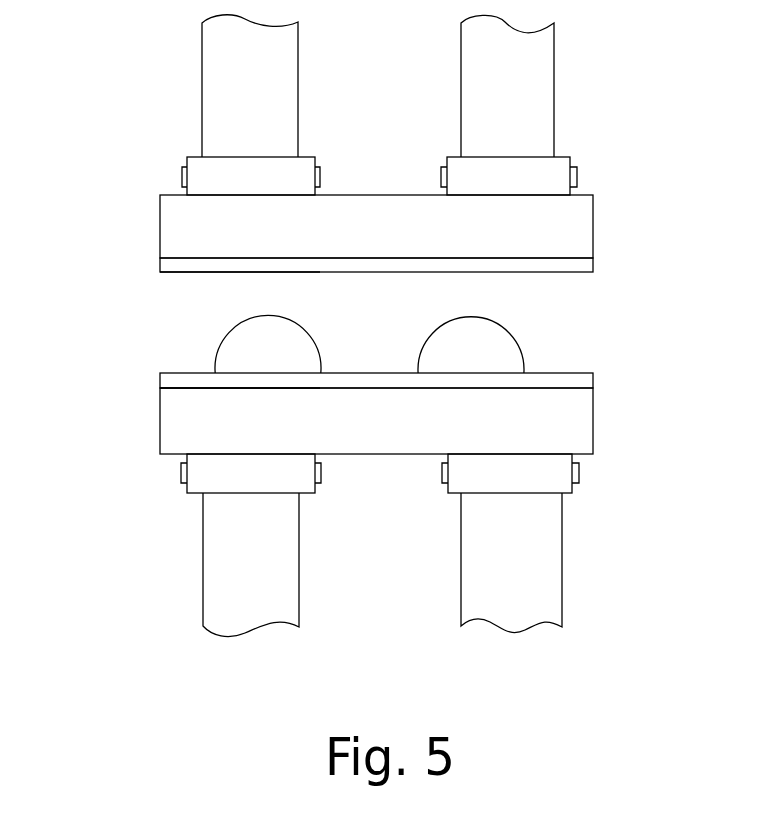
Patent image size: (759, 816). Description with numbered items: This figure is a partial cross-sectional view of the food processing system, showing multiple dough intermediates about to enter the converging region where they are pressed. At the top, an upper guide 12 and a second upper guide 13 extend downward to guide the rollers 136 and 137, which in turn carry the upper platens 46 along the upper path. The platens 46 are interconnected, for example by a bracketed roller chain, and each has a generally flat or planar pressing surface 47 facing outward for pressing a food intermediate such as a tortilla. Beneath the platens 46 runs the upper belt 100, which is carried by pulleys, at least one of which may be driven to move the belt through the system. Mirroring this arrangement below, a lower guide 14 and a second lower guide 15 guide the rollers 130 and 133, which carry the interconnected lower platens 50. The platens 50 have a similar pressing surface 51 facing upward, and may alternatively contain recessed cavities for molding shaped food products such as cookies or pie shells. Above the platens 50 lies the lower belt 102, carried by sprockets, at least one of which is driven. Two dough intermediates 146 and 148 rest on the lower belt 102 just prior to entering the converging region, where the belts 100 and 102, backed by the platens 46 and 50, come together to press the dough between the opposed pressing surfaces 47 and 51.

The upper guide 12 is at (275, 83).
The upper guide 13 is at (525, 83).
The lower guide 14 is at (275, 570).
The lower guide 15 is at (538, 583).
The platens 46 is at (562, 235).
The pressing surface 47 is at (198, 262).
The platens 50 is at (570, 427).
The pressing surface 51 is at (203, 415).
The upper belt 100 is at (573, 265).
The lower belt 102 is at (575, 382).
The roller 130 is at (210, 483).
The roller 133 is at (576, 485).
The roller 136 is at (203, 165).
The roller 137 is at (545, 172).
The dough intermediate 146 is at (287, 343).
The dough intermediate 148 is at (490, 347).